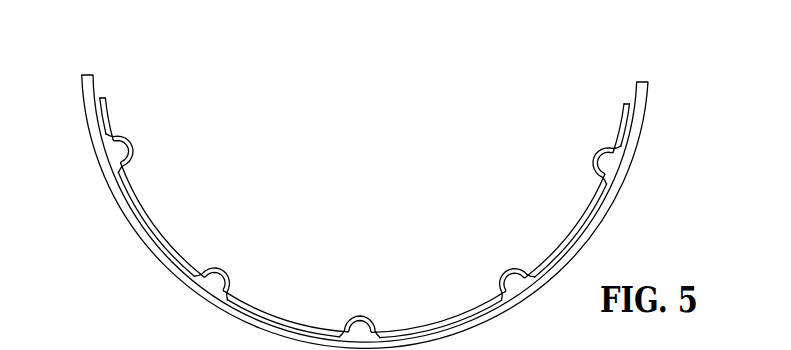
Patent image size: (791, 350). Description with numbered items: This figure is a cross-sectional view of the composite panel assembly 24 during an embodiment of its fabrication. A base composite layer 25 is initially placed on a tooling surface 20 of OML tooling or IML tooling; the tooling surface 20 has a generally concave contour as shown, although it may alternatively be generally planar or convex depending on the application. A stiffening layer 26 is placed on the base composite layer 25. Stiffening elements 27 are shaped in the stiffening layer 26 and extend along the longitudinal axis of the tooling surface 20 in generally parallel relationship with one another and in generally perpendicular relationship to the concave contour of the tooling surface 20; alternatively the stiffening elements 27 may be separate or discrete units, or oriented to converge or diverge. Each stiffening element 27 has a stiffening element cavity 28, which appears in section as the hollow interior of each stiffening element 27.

The tooling surface 20 is at (633, 90).
The composite panel assembly 24 is at (632, 64).
The base composite layer 25 is at (110, 118).
The stiffening layer 26 is at (283, 322).
The stiffening element 27 is at (209, 269).
The stiffening element cavity 28 is at (112, 142).